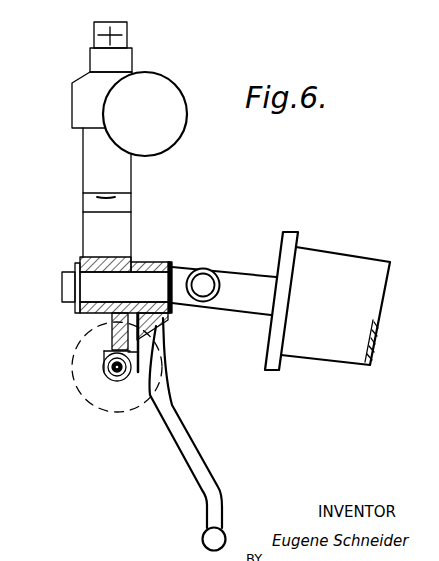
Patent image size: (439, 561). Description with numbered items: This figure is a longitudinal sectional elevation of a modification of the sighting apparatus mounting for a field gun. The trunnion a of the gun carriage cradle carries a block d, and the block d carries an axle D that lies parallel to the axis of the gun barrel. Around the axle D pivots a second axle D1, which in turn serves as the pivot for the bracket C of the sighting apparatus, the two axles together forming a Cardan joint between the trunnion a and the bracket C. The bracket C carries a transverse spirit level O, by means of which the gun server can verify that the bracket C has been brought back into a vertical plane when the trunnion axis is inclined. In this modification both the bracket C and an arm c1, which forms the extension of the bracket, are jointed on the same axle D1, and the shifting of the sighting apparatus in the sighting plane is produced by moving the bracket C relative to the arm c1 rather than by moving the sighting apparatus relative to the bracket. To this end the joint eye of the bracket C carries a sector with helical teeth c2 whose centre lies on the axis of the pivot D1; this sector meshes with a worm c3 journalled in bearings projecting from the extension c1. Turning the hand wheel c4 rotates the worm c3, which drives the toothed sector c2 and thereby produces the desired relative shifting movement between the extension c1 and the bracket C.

The trunnion a is at (341, 270).
The bracket C is at (122, 243).
The transverse spirit level O is at (122, 206).
The axle D is at (203, 285).
The axle D1 is at (92, 294).
The block d is at (238, 298).
The arm c1 is at (202, 470).
The sector with helical teeth c2 is at (136, 378).
The worm c3 is at (101, 370).
The hand wheel c4 is at (97, 379).